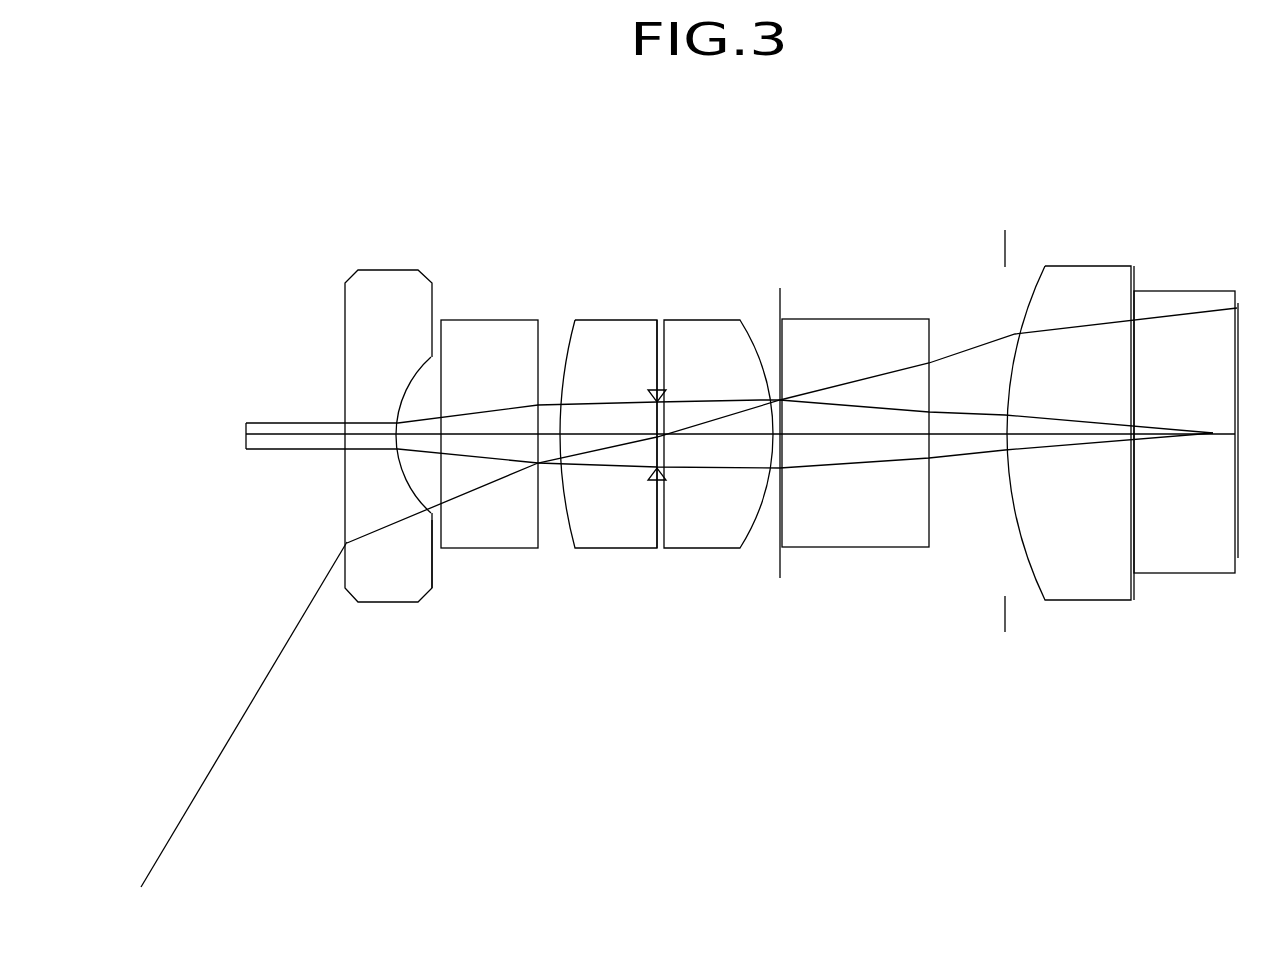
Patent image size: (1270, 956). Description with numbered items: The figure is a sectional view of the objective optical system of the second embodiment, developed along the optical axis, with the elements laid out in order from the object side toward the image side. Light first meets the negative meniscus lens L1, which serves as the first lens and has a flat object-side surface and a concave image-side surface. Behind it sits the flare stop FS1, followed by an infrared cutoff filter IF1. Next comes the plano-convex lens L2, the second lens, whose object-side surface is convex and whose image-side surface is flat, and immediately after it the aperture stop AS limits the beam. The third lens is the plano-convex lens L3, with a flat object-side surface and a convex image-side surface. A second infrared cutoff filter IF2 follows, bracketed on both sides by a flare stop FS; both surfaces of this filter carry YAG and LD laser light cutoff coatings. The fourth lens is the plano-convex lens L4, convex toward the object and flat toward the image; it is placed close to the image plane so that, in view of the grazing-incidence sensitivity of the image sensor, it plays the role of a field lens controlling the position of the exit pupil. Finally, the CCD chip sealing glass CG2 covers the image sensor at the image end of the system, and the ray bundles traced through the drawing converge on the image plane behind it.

The negative meniscus lens L1 is at (385, 268).
The flare stop FS1 is at (432, 570).
The infrared cutoff filter IF1 is at (487, 320).
The plano-convex lens L2 is at (617, 320).
The aperture stop AS is at (657, 507).
The plano-convex lens L3 is at (702, 320).
The flare stop FS is at (780, 578).
The infrared cutoff filter IF2 is at (853, 320).
The plano-convex lens L4 is at (1087, 265).
The CCD chip sealing glass CG2 is at (1182, 290).